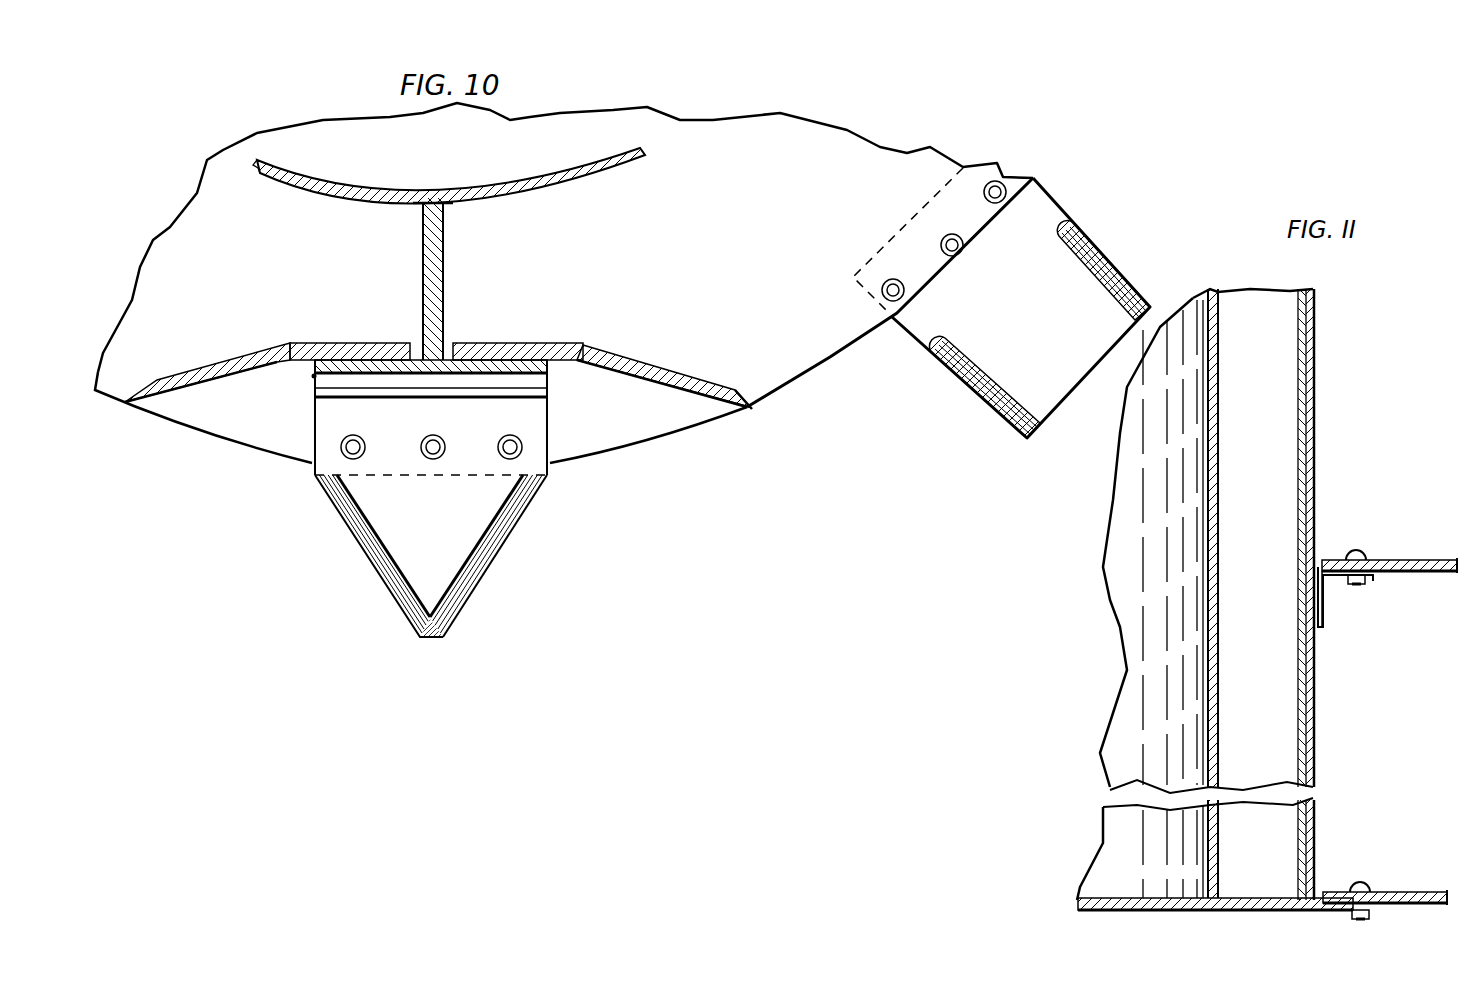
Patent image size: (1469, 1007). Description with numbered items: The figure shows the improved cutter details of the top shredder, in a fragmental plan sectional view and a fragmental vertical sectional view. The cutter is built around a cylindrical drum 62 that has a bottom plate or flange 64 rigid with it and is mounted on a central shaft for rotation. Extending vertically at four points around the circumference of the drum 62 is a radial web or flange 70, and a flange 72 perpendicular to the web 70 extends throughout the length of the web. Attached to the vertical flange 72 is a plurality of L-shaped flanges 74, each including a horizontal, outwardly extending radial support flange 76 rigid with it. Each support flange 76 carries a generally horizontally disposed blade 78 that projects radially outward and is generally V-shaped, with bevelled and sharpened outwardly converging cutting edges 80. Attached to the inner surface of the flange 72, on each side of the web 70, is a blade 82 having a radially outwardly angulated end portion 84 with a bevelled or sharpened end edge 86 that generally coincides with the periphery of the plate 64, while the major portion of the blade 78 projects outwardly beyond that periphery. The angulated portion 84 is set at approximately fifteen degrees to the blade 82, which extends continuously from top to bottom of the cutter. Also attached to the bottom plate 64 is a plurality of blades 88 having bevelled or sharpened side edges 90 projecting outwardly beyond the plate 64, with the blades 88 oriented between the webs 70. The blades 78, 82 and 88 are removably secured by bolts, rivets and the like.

In FIG. 10, the cylindrical drum 62 is at (607, 168).
In FIG. 11, the cylindrical drum 62 is at (1213, 503).
In FIG. 10, the bottom plate 64 is at (890, 170).
In FIG. 11, the bottom plate 64 is at (1252, 907).
In FIG. 10, the radial web 70 is at (427, 298).
In FIG. 11, the radial web 70 is at (1273, 427).
In FIG. 10, the flange 72 is at (550, 368).
In FIG. 11, the flange 72 is at (1313, 347).
In FIG. 10, the L-shaped flange 74 is at (317, 382).
In FIG. 11, the L-shaped flange 74 is at (1313, 613).
In FIG. 11, the support flange 76 is at (1342, 585).
In FIG. 10, the blade 78 is at (473, 508).
In FIG. 11, the blade 78 is at (1383, 560).
In FIG. 10, the cutting edges 80 is at (398, 580).
In FIG. 11, the cutting edges 80 is at (1455, 540).
In FIG. 10, the blade 82 is at (507, 353).
In FIG. 11, the blade 82 is at (1302, 460).
In FIG. 10, the angulated end portion 84 is at (627, 367).
In FIG. 10, the end edge 86 is at (758, 399).
In FIG. 10, the blade 88 is at (1023, 233).
In FIG. 11, the blade 88 is at (1393, 893).
In FIG. 10, the side edges 90 is at (1093, 263).
In FIG. 11, the side edges 90 is at (1447, 893).